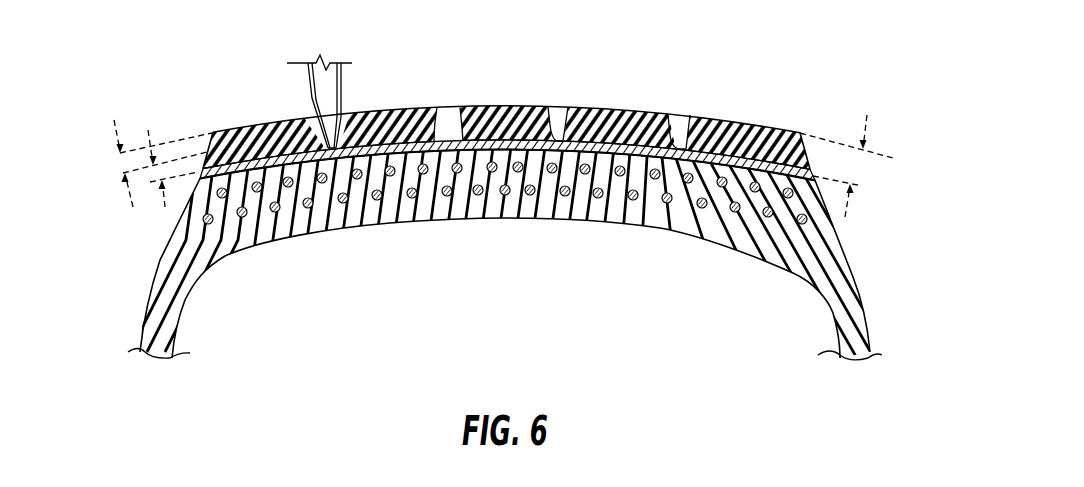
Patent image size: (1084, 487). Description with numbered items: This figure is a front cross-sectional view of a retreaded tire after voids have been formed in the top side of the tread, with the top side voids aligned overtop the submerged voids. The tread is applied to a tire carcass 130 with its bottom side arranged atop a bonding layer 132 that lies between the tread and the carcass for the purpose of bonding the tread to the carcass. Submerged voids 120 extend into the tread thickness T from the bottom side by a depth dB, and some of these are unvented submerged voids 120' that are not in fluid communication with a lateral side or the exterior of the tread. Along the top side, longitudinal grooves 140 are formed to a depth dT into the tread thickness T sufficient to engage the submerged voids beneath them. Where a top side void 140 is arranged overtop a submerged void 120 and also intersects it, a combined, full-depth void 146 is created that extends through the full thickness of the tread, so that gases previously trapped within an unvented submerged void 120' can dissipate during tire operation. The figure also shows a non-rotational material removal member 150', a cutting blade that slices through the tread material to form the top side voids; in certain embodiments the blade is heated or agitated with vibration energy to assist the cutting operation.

The submerged void 120 is at (510, 102).
The unvented submerged void 120' is at (546, 76).
The tire carcass 130 is at (869, 325).
The bonding layer 132 is at (812, 184).
The longitudinal groove 140 is at (690, 114).
The combined, full-depth void 146 is at (670, 114).
The non-rotational material removal member 150' is at (345, 80).
The tread thickness T is at (868, 126).
The depth of top side void dT is at (114, 130).
The depth of submerged void dB is at (152, 132).